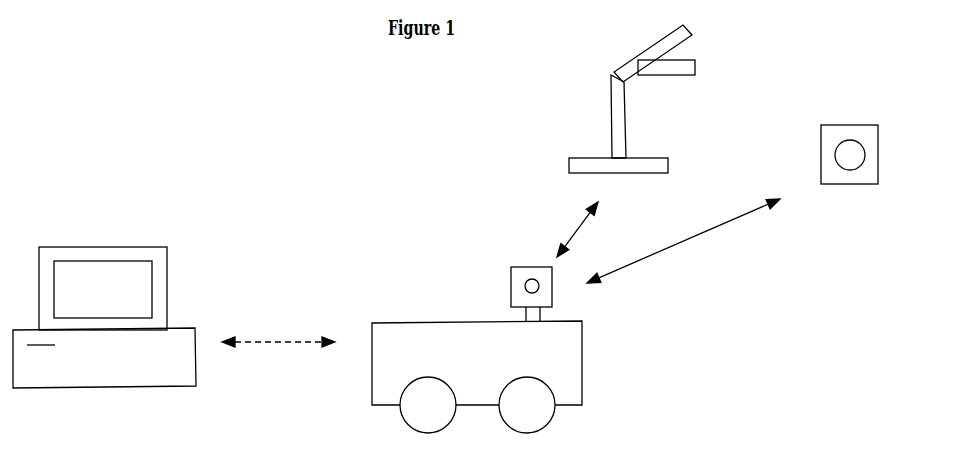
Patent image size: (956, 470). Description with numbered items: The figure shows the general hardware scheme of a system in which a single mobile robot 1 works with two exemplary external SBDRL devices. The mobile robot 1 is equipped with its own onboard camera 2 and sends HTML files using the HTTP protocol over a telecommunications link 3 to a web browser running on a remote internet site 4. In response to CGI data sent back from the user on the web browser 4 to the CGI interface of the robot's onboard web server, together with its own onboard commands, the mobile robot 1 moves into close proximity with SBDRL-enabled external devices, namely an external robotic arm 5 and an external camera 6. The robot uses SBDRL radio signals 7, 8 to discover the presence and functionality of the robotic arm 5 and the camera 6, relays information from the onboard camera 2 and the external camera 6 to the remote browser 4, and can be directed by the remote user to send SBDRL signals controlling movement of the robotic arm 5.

The mobile robot 1 is at (477, 377).
The onboard camera 2 is at (512, 294).
The telecommunications link 3 is at (278, 322).
The remote internet site 4 is at (104, 317).
The external robotic arm 5 is at (632, 99).
The external camera 6 is at (849, 183).
The SBDRL radio signal 7 is at (569, 227).
The SBDRL radio signal 8 is at (683, 241).